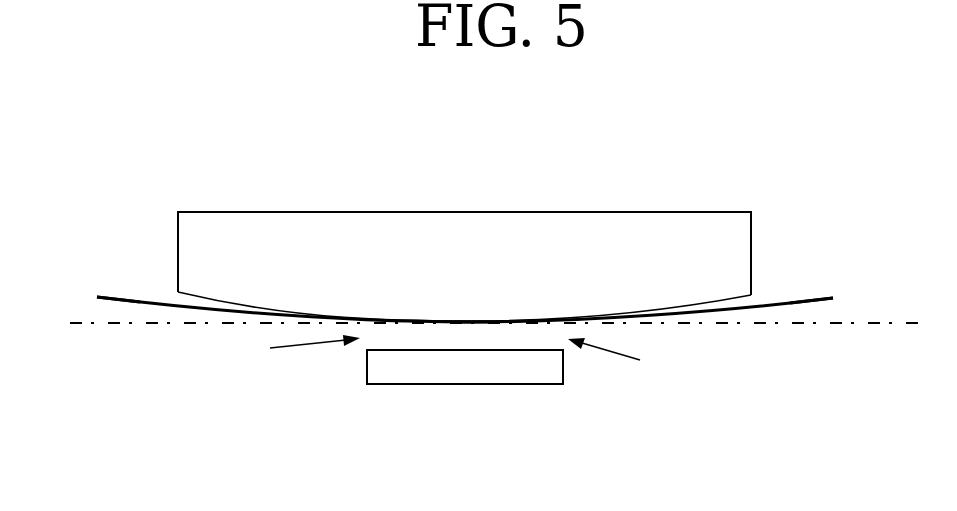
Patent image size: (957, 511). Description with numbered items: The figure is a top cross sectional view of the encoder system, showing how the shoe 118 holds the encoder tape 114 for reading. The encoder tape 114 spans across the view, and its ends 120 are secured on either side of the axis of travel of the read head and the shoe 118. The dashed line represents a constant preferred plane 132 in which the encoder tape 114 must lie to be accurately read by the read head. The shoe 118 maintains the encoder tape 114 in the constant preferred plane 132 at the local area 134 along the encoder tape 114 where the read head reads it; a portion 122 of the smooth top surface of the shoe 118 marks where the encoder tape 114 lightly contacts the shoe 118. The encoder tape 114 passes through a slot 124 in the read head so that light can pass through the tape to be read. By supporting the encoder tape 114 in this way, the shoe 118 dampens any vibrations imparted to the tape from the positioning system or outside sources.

The encoder tape 114 is at (738, 313).
The shoe 118 is at (380, 212).
The ends of the encoder tape 120 is at (123, 297).
The portion of the top surface of the shoe 122 is at (472, 322).
The slot 124 is at (285, 352).
The constant preferred plane 132 is at (70, 322).
The local area 134 is at (634, 361).